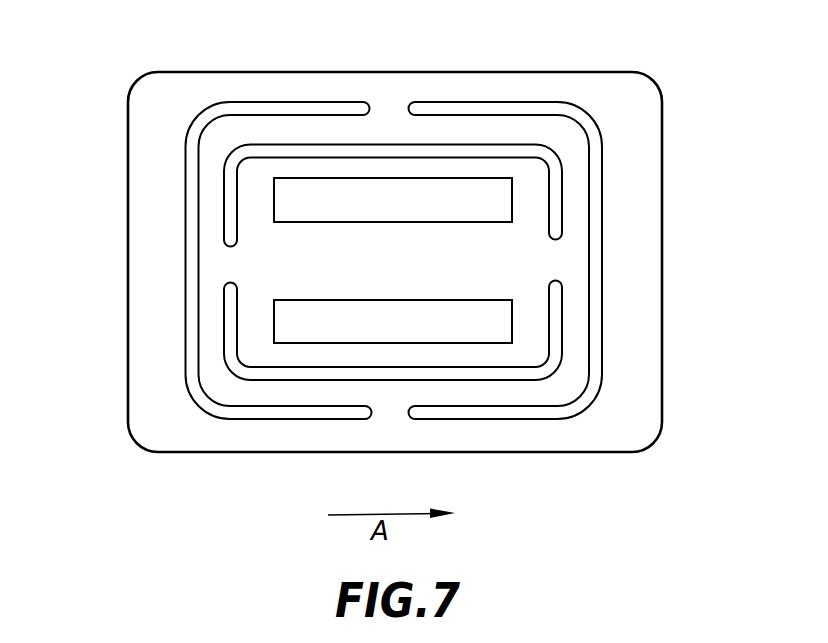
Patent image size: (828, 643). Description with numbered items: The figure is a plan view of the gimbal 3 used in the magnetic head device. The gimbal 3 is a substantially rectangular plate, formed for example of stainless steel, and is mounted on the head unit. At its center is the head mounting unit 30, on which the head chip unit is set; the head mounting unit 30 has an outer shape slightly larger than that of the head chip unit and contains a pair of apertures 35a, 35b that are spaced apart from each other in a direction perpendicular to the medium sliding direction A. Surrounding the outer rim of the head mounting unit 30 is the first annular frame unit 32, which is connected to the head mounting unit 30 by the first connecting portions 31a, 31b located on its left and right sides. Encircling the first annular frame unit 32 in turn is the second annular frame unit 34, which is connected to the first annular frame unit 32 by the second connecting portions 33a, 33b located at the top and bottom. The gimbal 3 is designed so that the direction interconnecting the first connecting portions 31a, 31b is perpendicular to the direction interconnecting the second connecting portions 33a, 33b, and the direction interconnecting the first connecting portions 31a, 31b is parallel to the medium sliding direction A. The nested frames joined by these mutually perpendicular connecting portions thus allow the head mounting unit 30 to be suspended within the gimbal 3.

The gimbal 3 is at (632, 350).
The head mounting unit 30 is at (393, 242).
The first connecting portion 31a is at (230, 266).
The first connecting portion 31b is at (558, 260).
The first annular frame unit 32 is at (512, 393).
The second connecting portion 33a is at (397, 112).
The second connecting portion 33b is at (393, 410).
The second annular frame unit 34 is at (278, 433).
The aperture 35a is at (315, 220).
The aperture 35b is at (452, 300).